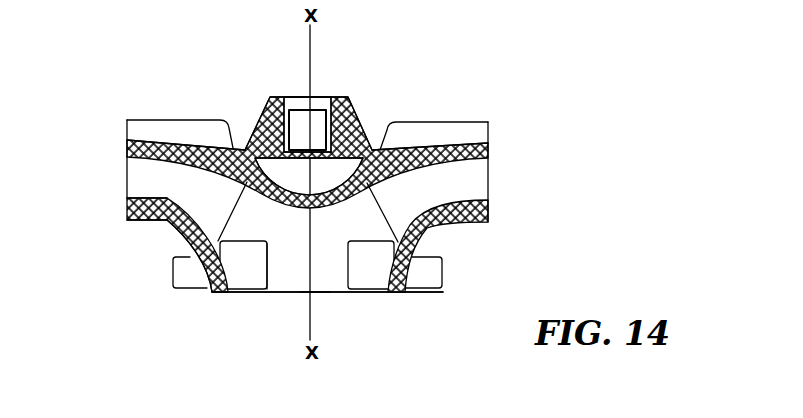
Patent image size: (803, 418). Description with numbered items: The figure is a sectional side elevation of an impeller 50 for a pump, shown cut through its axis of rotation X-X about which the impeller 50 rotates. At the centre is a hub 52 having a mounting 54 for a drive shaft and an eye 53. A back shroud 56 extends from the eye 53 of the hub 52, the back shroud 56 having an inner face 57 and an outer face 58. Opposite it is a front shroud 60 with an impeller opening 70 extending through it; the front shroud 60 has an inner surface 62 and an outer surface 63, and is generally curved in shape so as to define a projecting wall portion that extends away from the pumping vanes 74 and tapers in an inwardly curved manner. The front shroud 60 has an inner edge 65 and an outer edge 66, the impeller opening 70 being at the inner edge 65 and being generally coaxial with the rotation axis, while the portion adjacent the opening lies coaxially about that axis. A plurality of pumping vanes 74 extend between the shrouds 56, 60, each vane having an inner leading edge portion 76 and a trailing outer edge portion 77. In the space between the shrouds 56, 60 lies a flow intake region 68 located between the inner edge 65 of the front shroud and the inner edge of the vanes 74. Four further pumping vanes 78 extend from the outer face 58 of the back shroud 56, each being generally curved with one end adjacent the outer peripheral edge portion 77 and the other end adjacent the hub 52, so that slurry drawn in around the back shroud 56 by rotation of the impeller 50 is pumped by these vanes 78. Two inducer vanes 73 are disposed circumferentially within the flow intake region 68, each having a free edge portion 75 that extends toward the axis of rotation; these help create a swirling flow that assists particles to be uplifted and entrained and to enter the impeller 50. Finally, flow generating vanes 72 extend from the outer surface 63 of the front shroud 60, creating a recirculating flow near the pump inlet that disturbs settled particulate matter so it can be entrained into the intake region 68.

The impeller 50 is at (450, 63).
The hub 52 is at (349, 123).
The eye 53 is at (335, 207).
The mounting 54 is at (321, 106).
The back shroud 56 is at (126, 124).
The inner face 57 is at (126, 167).
The outer face 58 is at (147, 150).
The front shroud 60 is at (181, 224).
The inner surface 62 is at (166, 199).
The outer surface 63 is at (143, 223).
The inner edge 65 is at (221, 294).
The outer edge 66 is at (127, 204).
The flow intake region 68 is at (294, 276).
The impeller opening 70 is at (336, 295).
The flow generating vanes 72 is at (183, 271).
The inducer vanes 73 is at (246, 256).
The pumping vanes 74 is at (470, 173).
The free edge portion 75 is at (267, 258).
The inner leading edge portion 76 is at (388, 215).
The trailing outer edge portion 77 is at (489, 189).
The further pumping vanes 78 is at (213, 127).